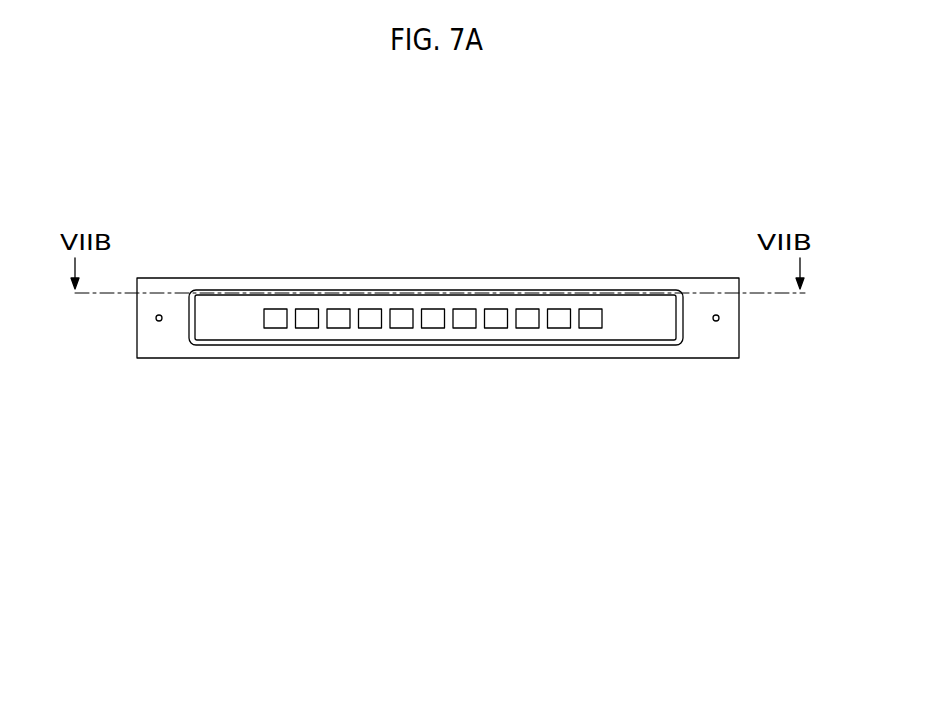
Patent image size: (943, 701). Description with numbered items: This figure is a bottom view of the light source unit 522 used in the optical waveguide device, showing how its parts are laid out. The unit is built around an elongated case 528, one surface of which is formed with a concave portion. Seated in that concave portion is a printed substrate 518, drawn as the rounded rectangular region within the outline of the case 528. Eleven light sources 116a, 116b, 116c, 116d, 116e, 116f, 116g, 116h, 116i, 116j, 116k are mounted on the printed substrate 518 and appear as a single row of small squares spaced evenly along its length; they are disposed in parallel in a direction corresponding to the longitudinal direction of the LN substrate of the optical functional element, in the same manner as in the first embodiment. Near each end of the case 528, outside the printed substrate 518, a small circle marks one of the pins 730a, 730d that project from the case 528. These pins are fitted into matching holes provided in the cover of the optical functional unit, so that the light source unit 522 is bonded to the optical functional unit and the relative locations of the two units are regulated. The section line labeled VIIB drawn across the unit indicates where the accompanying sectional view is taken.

The light source unit 522 is at (203, 231).
The case 528 is at (143, 278).
The printed substrate 518 is at (636, 310).
The pin 730a is at (159, 322).
The pin 730d is at (716, 322).
The light source 116a is at (272, 318).
The light source 116b is at (306, 318).
The light source 116c is at (337, 318).
The light source 116d is at (369, 318).
The light source 116e is at (401, 318).
The light source 116f is at (432, 318).
The light source 116g is at (464, 318).
The light source 116h is at (496, 318).
The light source 116i is at (527, 318).
The light source 116j is at (559, 318).
The light source 116k is at (590, 318).